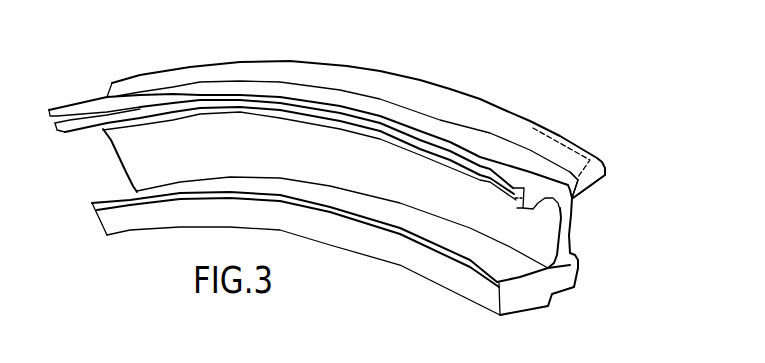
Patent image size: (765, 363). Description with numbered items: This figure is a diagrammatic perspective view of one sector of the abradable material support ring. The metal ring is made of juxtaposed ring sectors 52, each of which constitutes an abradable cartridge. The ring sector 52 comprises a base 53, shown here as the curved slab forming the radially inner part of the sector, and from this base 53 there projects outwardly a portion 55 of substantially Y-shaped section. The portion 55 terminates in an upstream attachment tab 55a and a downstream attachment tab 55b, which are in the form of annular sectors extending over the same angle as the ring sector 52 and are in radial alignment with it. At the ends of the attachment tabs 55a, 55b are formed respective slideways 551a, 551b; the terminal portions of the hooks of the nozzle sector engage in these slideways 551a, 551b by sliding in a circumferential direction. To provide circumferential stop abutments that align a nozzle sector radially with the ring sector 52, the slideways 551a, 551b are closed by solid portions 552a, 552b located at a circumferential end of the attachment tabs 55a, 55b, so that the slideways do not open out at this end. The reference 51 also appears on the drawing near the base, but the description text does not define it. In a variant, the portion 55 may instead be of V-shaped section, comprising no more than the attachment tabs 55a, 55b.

The base plate 51 is at (453, 275).
The ring sector 52 is at (362, 268).
The base 53 is at (538, 280).
The portion of substantially Y-shaped section 55 is at (568, 247).
The upstream attachment tab 55a is at (571, 227).
The downstream attachment tab 55b is at (590, 204).
The slideway 551a is at (405, 148).
The slideway 551b is at (545, 128).
The solid portion 552a is at (535, 206).
The solid portion 552b is at (603, 175).